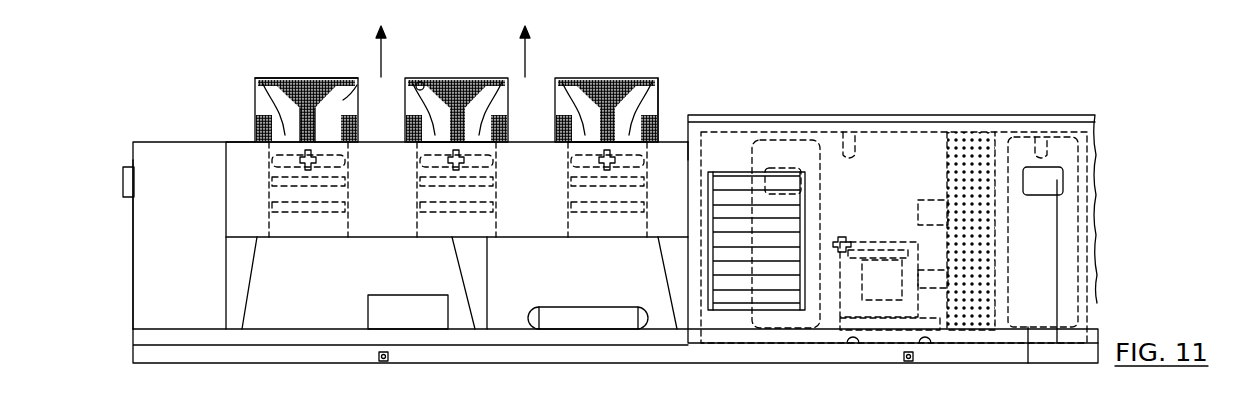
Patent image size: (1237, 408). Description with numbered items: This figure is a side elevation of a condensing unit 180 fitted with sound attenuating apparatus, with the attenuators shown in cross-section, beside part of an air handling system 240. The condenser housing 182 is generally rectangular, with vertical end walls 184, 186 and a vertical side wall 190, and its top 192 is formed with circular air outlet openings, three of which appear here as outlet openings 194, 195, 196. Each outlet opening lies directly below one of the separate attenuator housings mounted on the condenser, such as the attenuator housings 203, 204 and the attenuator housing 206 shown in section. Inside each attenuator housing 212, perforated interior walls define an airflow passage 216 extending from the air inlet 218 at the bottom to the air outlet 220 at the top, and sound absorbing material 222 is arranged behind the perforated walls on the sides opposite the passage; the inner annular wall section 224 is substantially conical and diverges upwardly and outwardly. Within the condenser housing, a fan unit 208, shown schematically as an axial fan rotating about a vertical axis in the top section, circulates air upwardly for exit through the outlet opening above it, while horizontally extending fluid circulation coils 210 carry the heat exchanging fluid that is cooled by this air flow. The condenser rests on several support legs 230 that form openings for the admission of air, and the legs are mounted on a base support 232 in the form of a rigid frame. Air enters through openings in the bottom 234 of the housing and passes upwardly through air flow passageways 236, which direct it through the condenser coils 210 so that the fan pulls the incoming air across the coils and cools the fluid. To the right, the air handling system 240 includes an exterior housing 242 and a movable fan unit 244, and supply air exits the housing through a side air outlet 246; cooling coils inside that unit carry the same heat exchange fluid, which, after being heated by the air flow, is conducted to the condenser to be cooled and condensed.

The condensing unit 180 is at (230, 148).
The condenser housing 182 is at (310, 238).
The vertical end wall 184 is at (132, 240).
The vertical end wall 186 is at (690, 155).
The vertical side wall 190 is at (546, 209).
The top 192 is at (230, 140).
The air outlet opening 194 is at (285, 143).
The air outlet opening 195 is at (432, 145).
The air outlet opening 196 is at (582, 143).
The attenuator housing 203 is at (305, 78).
The attenuator housing 204 is at (467, 78).
The third dispensing module 206 is at (618, 78).
The fan unit 208 is at (272, 163).
The fluid circulation pipes or coils 210 is at (272, 210).
The attenuator housing 212 is at (655, 125).
The airflow passage 216 is at (337, 110).
The air inlet 218 is at (285, 135).
The air outlet 220 is at (357, 85).
The sound absorbing material 222 is at (281, 78).
The inner annular wall section 224 is at (418, 82).
The support legs 230 is at (237, 310).
The base support 232 is at (262, 356).
The bottom 234 is at (557, 240).
The air flow passageways 236 is at (417, 212).
The air handling system 240 is at (862, 112).
The exterior housing 242 is at (1030, 115).
The movable fan unit 244 is at (912, 228).
The side air outlet 246 is at (735, 185).